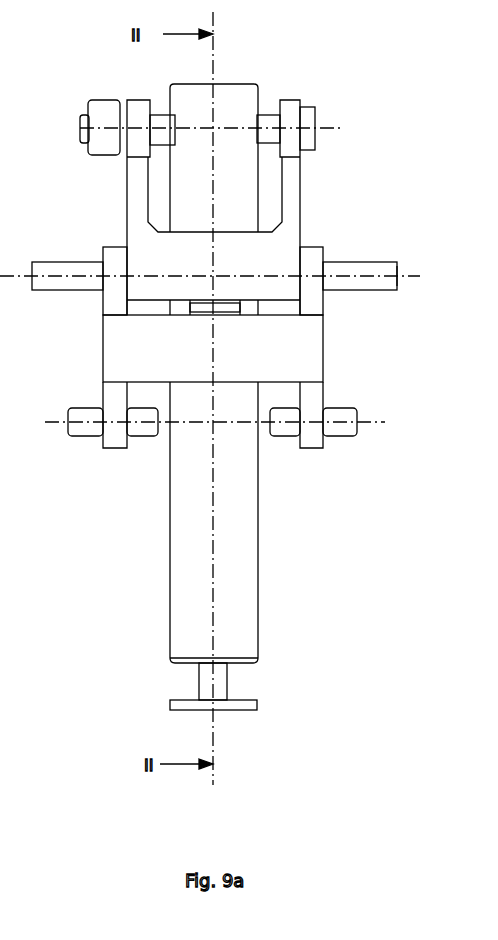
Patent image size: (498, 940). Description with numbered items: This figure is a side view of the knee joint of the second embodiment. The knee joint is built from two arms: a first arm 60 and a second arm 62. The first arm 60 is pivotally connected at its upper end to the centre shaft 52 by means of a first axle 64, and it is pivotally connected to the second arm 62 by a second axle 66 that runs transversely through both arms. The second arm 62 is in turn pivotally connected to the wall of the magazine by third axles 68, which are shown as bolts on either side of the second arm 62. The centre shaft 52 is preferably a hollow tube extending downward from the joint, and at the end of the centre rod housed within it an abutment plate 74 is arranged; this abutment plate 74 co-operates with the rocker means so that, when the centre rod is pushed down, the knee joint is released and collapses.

The centre shaft 52 is at (258, 505).
The first arm 60 is at (303, 177).
The second arm 62 is at (325, 351).
The first axle 64 is at (268, 117).
The second axle 66 is at (374, 262).
The third axles 68 is at (72, 432).
The abutment plate 74 is at (240, 700).